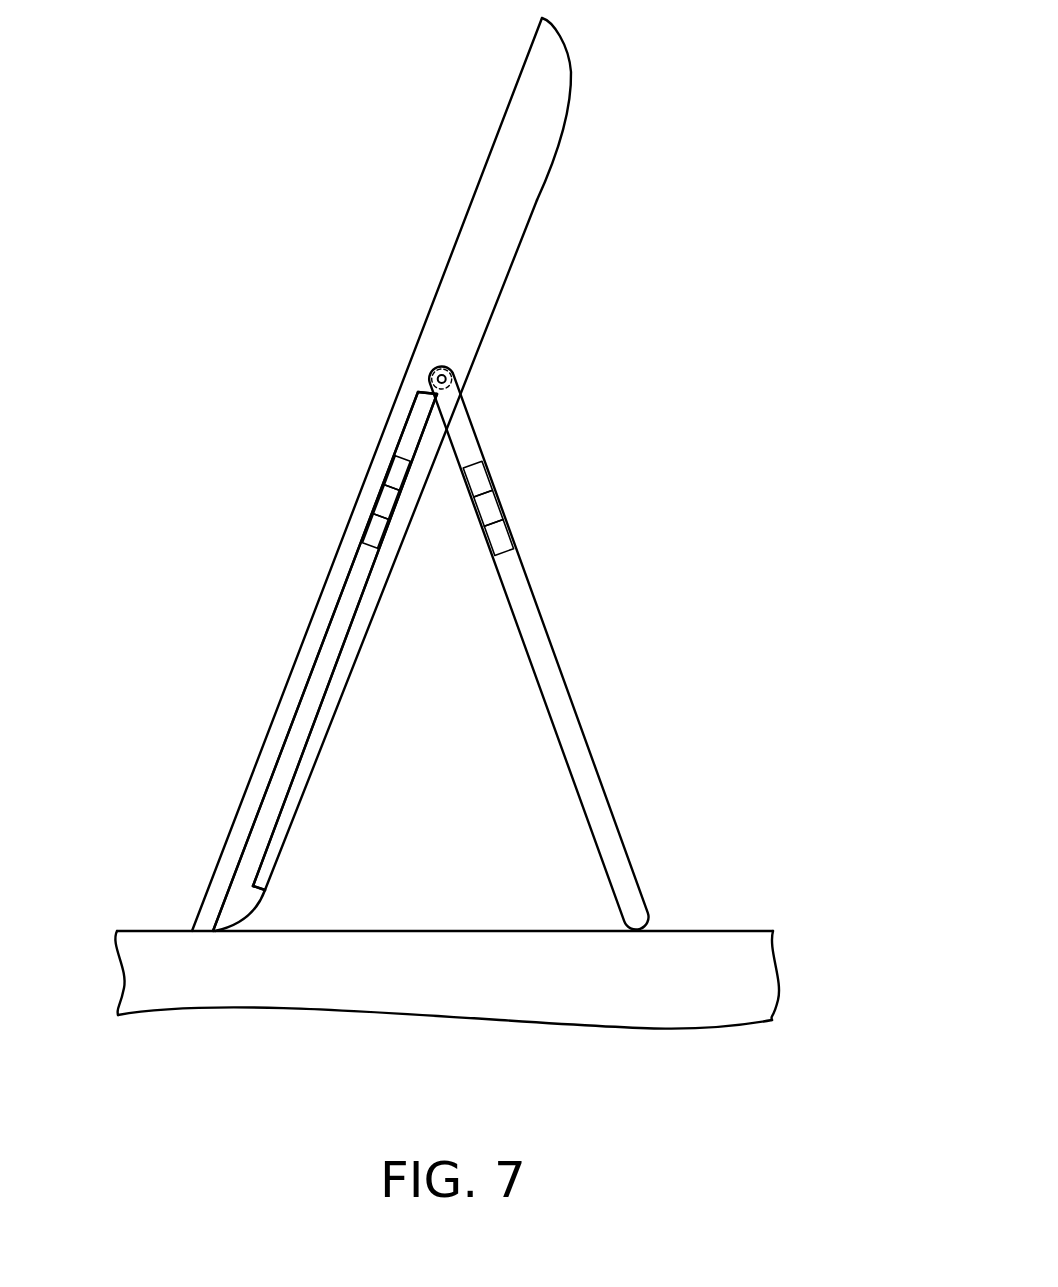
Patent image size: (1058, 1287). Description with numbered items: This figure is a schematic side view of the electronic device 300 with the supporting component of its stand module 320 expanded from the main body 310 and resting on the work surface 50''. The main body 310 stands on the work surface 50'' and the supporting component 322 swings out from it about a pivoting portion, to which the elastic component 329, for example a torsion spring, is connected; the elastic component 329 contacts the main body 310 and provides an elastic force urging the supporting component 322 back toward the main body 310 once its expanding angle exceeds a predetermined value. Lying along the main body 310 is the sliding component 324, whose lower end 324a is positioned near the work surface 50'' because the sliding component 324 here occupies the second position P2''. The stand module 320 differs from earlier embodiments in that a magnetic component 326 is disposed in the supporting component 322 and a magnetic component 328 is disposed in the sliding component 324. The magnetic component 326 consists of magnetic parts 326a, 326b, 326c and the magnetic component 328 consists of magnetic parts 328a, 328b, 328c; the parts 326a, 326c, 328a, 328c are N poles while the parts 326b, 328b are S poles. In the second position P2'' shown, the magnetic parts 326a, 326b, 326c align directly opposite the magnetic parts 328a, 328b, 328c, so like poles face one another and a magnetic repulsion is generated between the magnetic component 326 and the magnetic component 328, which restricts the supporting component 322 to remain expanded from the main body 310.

The electronic device 300 is at (737, 42).
The main body 310 is at (580, 183).
The stand module 320 is at (582, 632).
The supporting component 322 is at (563, 700).
The sliding component 324 is at (330, 655).
The end of sliding component 324a is at (235, 907).
The magnetic component 326 is at (577, 489).
The magnetic part 326a is at (487, 470).
The magnetic part 326b is at (495, 502).
The magnetic part 326c is at (507, 532).
The magnetic component 328 is at (293, 480).
The magnetic part 328a is at (393, 468).
The magnetic part 328b is at (383, 498).
The magnetic part 328c is at (373, 528).
The elastic component 329 is at (449, 371).
The second position P2'' is at (197, 822).
The work surface 50'' is at (419, 947).